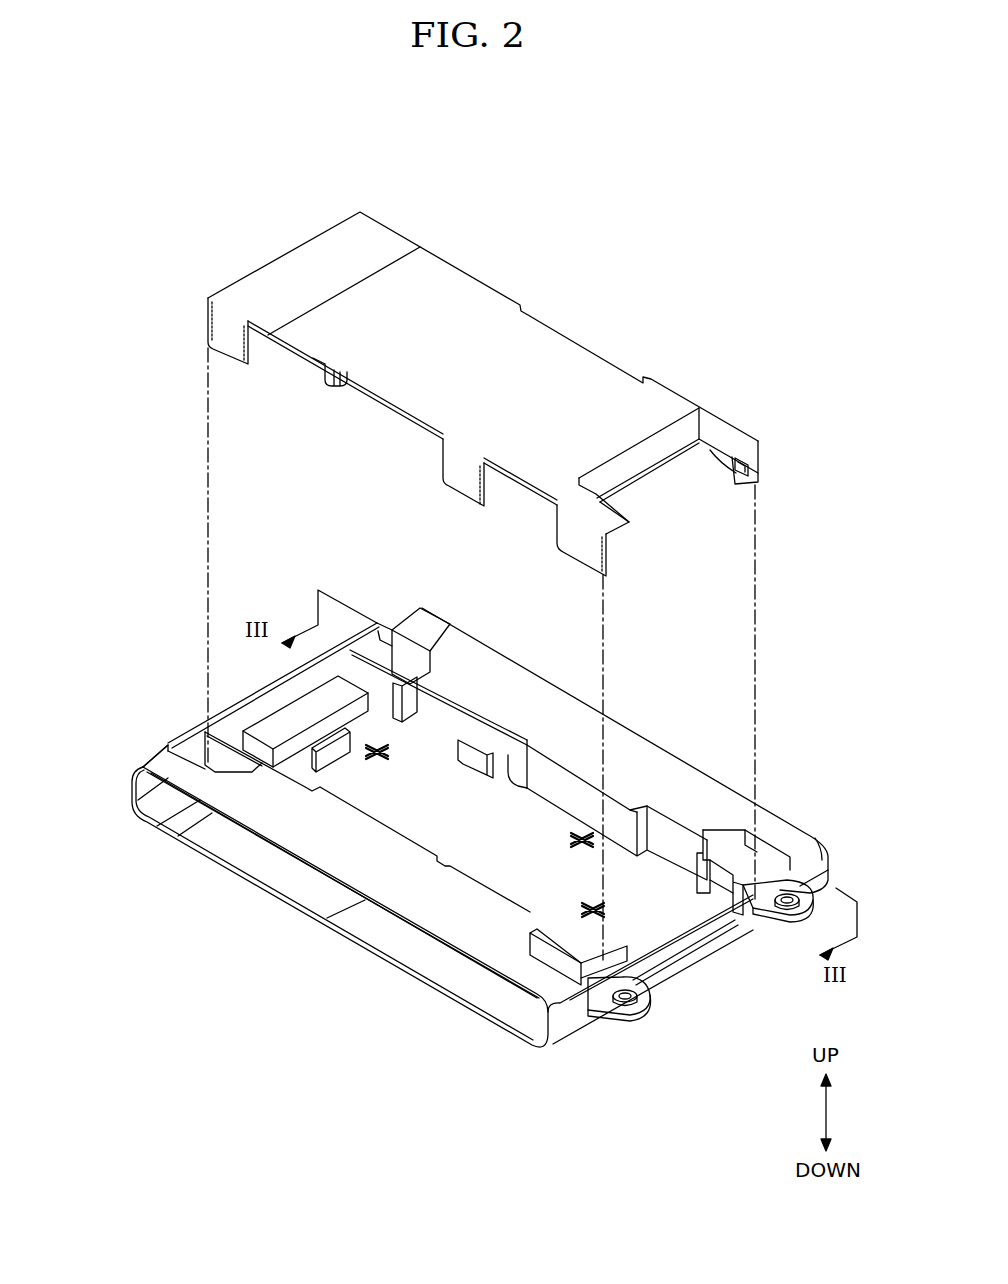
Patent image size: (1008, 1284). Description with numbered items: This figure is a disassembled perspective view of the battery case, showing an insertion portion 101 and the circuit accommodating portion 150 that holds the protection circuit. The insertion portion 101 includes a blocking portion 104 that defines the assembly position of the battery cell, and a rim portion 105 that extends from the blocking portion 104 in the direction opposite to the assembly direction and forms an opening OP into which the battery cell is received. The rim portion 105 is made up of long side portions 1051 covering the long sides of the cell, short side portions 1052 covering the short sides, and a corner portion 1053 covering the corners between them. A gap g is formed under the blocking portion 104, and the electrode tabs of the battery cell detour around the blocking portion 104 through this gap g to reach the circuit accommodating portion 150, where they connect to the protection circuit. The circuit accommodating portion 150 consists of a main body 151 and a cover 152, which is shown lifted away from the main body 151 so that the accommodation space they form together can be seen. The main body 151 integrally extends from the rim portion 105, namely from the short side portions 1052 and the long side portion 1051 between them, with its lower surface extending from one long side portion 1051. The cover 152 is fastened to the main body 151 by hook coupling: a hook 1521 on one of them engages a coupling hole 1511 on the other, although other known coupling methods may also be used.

The circuit accommodating portion 150 is at (133, 460).
The main body 151 is at (258, 690).
The cover 152 is at (340, 358).
The coupling hole 1511 is at (388, 698).
The hook 1521 is at (232, 345).
The insertion portion 101 is at (598, 1058).
The blocking portion 104 is at (454, 718).
The rim portion 105 is at (515, 676).
The gap g is at (520, 787).
The long side portion 1051 is at (305, 912).
The short side portion 1052 is at (130, 790).
The corner portion 1053 is at (137, 769).
The opening OP is at (472, 984).